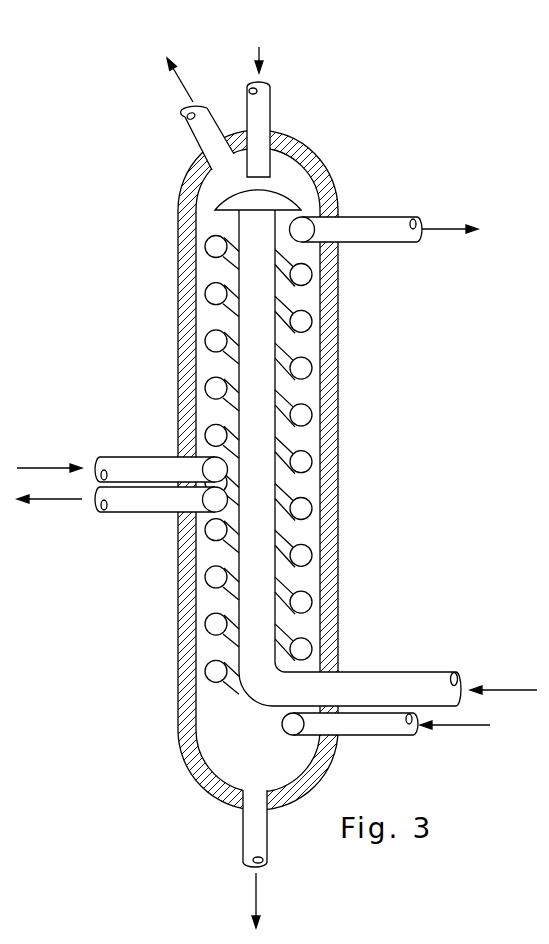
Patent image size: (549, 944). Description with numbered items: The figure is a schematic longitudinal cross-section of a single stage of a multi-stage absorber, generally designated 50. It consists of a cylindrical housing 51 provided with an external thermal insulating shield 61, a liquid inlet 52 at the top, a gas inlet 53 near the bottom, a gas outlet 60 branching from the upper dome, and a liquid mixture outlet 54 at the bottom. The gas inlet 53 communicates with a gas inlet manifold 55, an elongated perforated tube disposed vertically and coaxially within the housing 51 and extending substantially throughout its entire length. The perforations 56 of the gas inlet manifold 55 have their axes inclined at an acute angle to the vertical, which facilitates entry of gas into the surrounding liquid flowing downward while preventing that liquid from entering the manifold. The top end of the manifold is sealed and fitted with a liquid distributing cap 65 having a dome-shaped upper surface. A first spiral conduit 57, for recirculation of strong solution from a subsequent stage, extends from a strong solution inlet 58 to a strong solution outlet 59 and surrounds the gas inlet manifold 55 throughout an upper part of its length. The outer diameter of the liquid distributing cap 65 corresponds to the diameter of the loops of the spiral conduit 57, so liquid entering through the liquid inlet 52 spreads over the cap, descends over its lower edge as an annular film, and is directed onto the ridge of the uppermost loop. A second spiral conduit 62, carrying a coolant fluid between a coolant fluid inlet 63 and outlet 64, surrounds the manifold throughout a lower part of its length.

The single stage of multi-stage absorber 50 is at (277, 482).
The cylindrical housing 51 is at (330, 397).
The liquid inlet 52 is at (273, 100).
The gas inlet 53 is at (377, 683).
The liquid mixture outlet 54 is at (250, 841).
The gas inlet manifold 55 is at (264, 465).
The perforations 56 is at (305, 336).
The first spiral conduit 57 is at (212, 342).
The strong solution inlet 58 is at (143, 464).
The strong solution outlet 59 is at (357, 227).
The gas outlet 60 is at (195, 140).
The external thermal insulating shield 61 is at (333, 448).
The second spiral conduit 62 is at (215, 624).
The coolant fluid inlet 63 is at (380, 723).
The coolant fluid outlet 64 is at (152, 507).
The liquid distributing cap 65 is at (248, 200).